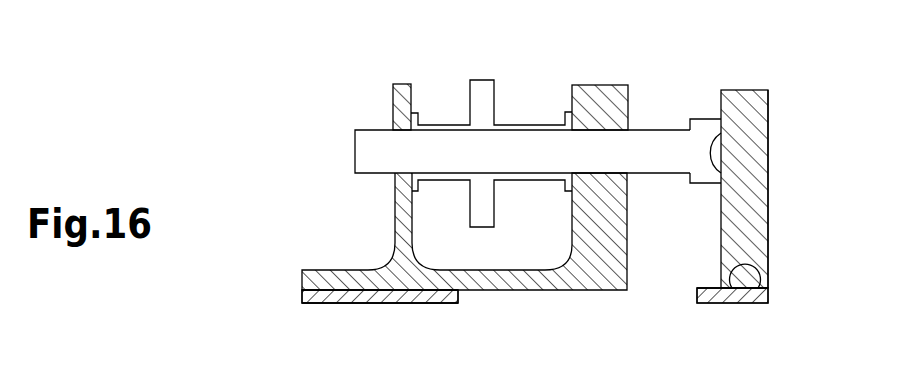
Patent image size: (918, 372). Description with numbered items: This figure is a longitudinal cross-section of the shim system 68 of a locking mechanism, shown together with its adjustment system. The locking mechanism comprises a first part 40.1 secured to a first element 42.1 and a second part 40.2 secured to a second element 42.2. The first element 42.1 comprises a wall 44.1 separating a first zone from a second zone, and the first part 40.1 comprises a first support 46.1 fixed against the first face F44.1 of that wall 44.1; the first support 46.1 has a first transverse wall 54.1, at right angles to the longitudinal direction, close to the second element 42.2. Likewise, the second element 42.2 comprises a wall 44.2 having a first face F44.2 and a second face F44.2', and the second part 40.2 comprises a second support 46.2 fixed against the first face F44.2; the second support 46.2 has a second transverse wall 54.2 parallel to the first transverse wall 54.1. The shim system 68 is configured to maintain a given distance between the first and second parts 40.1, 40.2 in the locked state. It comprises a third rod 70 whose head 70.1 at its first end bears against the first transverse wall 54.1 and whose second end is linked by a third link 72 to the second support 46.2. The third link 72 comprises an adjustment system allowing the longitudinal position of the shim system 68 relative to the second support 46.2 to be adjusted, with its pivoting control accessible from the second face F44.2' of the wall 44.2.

The third rod 70 is at (434, 139).
The head 70.1 is at (705, 120).
The second part 40.2 is at (388, 74).
The second transverse wall 54.2 is at (603, 107).
The shim system 68 is at (520, 97).
The third link 72 is at (556, 104).
The first part 40.1 is at (767, 82).
The first transverse wall 54.1 is at (760, 109).
The first support 46.1 is at (760, 136).
The second support 46.2 is at (352, 270).
The wall 44.2 is at (302, 298).
The first face F44.2 is at (316, 261).
The second element 42.2 is at (324, 310).
The second face F44.2' is at (413, 320).
The wall 44.1 is at (770, 297).
The first element 42.1 is at (726, 312).
The first face F44.1 is at (750, 267).